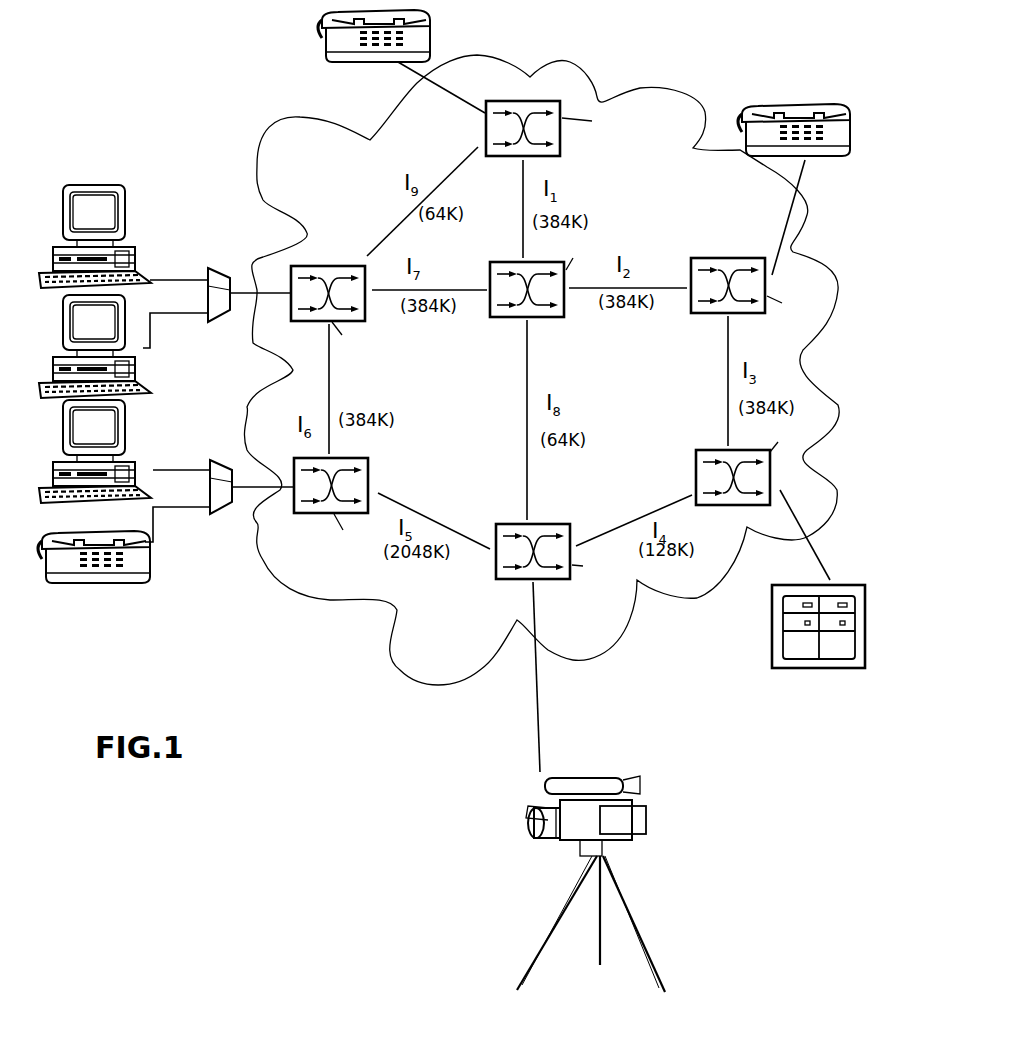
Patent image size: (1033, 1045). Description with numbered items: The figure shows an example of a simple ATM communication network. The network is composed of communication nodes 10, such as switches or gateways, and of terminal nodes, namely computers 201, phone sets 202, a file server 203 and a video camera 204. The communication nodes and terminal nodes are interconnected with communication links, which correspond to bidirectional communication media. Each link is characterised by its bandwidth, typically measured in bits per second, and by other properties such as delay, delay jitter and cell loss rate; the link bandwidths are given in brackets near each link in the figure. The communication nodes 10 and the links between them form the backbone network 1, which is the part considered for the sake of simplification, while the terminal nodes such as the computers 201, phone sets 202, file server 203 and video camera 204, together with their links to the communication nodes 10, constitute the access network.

The backbone network 1 is at (640, 613).
The communication node 10 is at (562, 143).
The computer 201 is at (105, 182).
The phone set 202 is at (318, 45).
The file server 203 is at (826, 675).
The video camera 204 is at (592, 756).